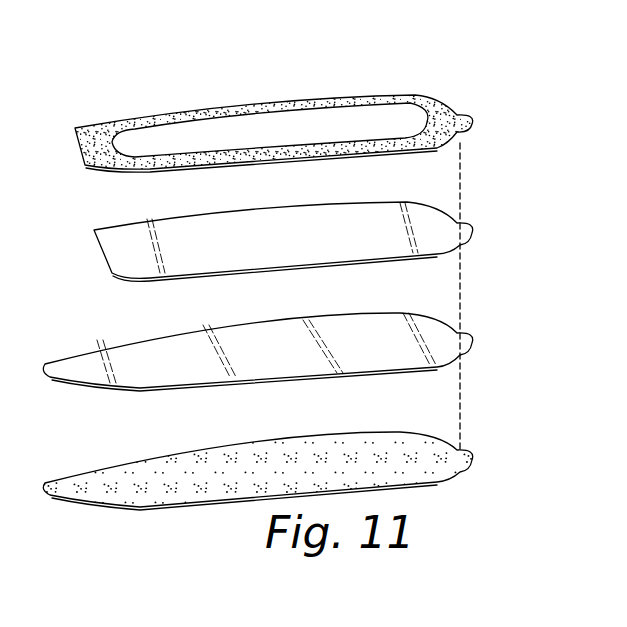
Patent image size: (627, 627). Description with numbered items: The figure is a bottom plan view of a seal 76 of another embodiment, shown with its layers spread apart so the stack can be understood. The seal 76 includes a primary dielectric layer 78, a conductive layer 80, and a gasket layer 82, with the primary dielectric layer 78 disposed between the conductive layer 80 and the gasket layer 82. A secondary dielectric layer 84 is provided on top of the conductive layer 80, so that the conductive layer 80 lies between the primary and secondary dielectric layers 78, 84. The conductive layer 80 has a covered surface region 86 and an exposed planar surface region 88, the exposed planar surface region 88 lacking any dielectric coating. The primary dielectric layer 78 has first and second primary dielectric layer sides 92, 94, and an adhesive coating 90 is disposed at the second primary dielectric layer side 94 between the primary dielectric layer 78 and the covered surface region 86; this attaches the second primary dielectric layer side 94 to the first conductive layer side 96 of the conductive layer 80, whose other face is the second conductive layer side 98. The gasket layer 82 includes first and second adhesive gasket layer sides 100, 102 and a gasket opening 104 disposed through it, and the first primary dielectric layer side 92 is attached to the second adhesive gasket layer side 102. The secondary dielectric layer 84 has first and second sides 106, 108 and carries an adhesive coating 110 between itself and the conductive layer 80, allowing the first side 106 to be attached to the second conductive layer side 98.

The seal 76 is at (40, 117).
The primary dielectric layer 78 is at (432, 217).
The conductive layer 80 is at (432, 325).
The gasket layer 82 is at (427, 96).
The secondary dielectric layer 84 is at (432, 445).
The covered surface region 86 is at (133, 375).
The exposed planar surface region 88 is at (68, 363).
The adhesive coating 90 is at (130, 278).
The first primary dielectric layer side 92 is at (450, 230).
The second primary dielectric layer side 94 is at (360, 262).
The first conductive layer side 96 is at (450, 322).
The second conductive layer side 98 is at (360, 375).
The first adhesive gasket layer side 100 is at (447, 103).
The second adhesive gasket layer side 102 is at (105, 175).
The gasket opening 104 is at (157, 138).
The first side of secondary dielectric layer 106 is at (452, 455).
The second side of secondary dielectric layer 108 is at (83, 502).
The adhesive coating 110 is at (93, 473).